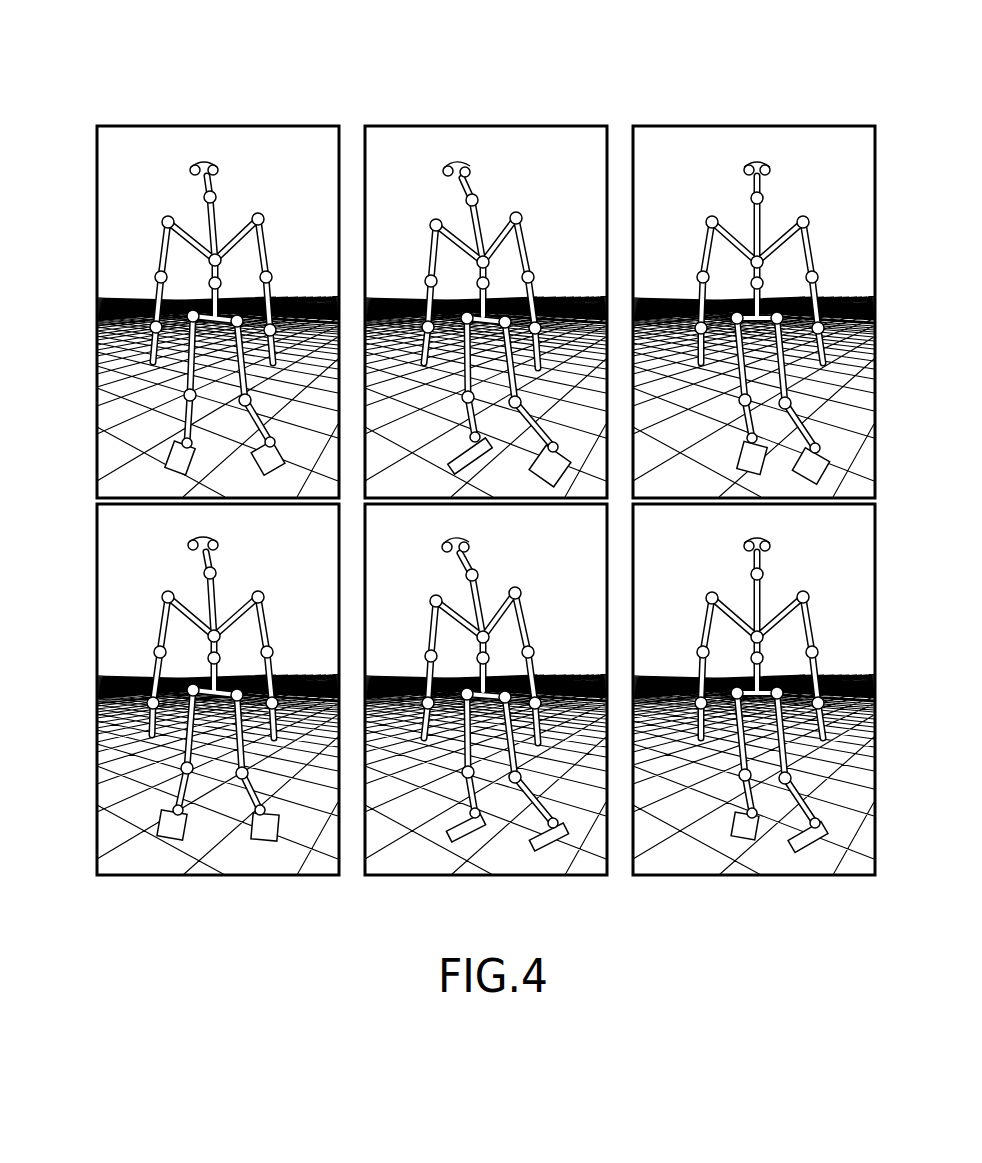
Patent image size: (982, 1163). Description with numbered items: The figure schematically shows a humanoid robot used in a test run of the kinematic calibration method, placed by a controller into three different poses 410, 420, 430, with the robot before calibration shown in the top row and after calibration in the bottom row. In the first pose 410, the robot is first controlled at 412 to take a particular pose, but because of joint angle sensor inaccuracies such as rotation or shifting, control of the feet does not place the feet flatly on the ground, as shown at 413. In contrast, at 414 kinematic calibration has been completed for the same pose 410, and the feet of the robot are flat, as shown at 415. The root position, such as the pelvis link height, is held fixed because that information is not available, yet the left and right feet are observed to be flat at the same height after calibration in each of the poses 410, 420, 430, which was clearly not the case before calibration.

The first pose 410 is at (191, 259).
The second pose 420 is at (468, 86).
The third pose 430 is at (761, 86).
The robot control before calibration 412 is at (89, 354).
The feet before calibration 413 is at (97, 412).
The robot control after calibration 414 is at (89, 710).
The feet after calibration 415 is at (97, 772).